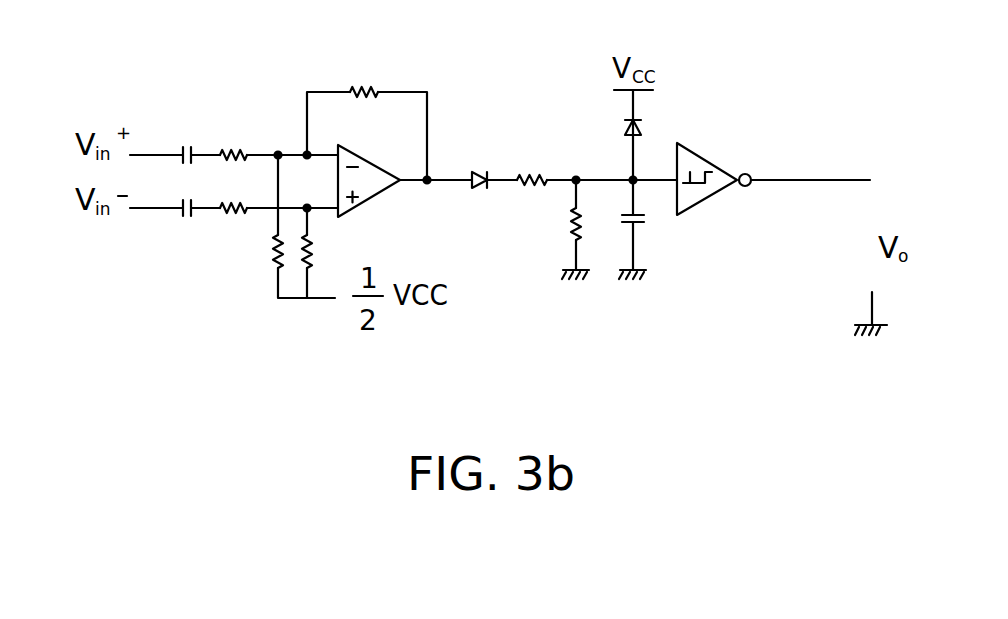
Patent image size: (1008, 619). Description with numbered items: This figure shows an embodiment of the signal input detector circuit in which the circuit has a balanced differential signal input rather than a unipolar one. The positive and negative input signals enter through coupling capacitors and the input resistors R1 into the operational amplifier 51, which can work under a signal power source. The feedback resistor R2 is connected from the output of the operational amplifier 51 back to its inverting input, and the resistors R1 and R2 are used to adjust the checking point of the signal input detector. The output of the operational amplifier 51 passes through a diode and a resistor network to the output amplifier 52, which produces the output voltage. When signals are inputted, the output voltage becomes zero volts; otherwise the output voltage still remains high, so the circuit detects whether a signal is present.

The operational amplifier 51 is at (362, 203).
The output amplifier 52 is at (700, 157).
The resistor R1 is at (235, 192).
The resistor R2 is at (365, 74).